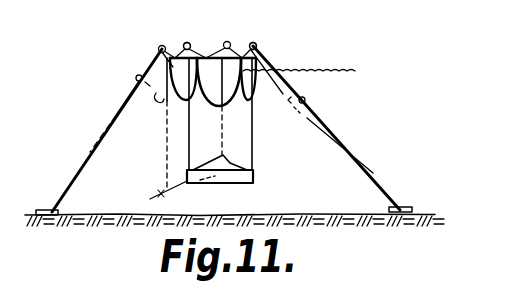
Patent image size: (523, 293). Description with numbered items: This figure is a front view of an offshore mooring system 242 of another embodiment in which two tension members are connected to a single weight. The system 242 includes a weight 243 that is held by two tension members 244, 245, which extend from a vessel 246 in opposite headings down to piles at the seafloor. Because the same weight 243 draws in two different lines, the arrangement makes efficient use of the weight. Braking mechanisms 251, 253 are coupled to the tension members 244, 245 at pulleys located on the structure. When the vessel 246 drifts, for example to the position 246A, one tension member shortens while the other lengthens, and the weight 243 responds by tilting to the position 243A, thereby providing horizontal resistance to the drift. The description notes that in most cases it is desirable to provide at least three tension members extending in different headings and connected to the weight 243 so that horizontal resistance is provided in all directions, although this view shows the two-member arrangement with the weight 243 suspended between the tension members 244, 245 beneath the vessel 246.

The system 242 is at (130, 46).
The weight 243 is at (255, 173).
The tilted position of weight 243A is at (159, 194).
The tension member 244 is at (338, 129).
The tension member 245 is at (118, 113).
The vessel 246 is at (306, 100).
The drifted position of vessel 246A is at (136, 77).
The braking mechanism 251 is at (199, 13).
The braking mechanism 253 is at (253, 42).